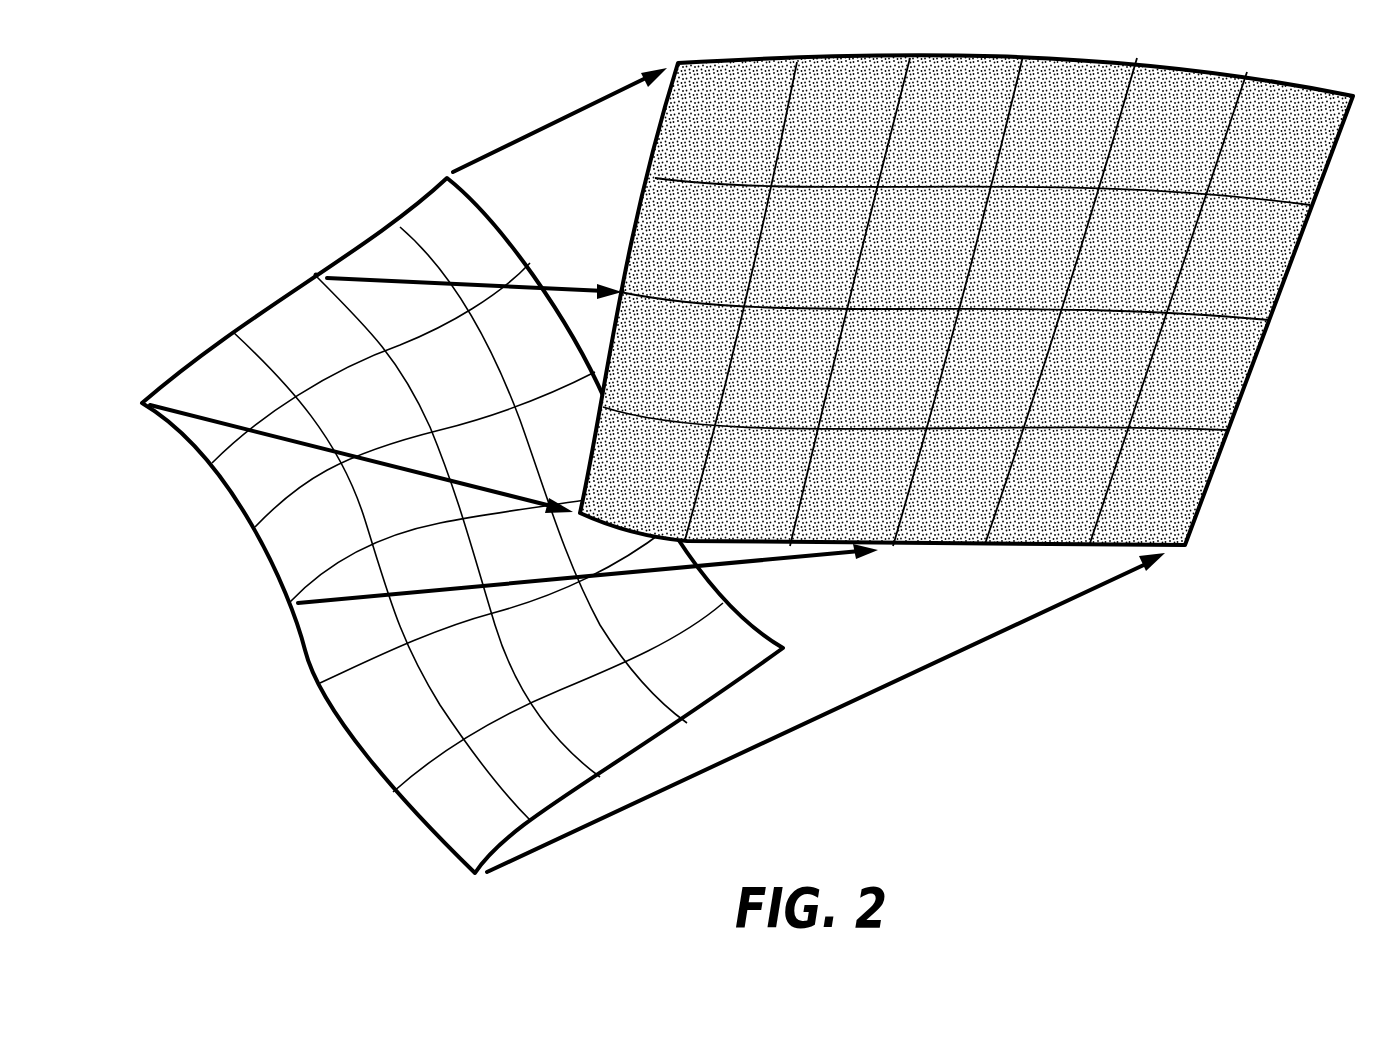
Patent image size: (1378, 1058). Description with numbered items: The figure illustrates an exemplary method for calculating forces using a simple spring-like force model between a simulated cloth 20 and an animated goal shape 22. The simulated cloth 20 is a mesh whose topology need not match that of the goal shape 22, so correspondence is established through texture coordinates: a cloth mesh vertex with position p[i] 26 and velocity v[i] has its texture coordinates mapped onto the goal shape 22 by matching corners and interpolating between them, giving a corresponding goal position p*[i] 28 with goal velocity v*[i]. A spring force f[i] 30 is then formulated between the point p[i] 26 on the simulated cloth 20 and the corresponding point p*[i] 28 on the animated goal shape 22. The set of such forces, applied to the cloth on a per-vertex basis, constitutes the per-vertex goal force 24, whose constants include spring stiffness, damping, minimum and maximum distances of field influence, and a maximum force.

The simulated cloth 20 is at (340, 722).
The animated goal shape 22 is at (1270, 92).
The per-vertex goal force 24 is at (1052, 795).
The cloth mesh vertex position p[i] 26 is at (316, 274).
The goal position p*[i] 28 is at (622, 290).
The spring force f[i] 30 is at (473, 285).